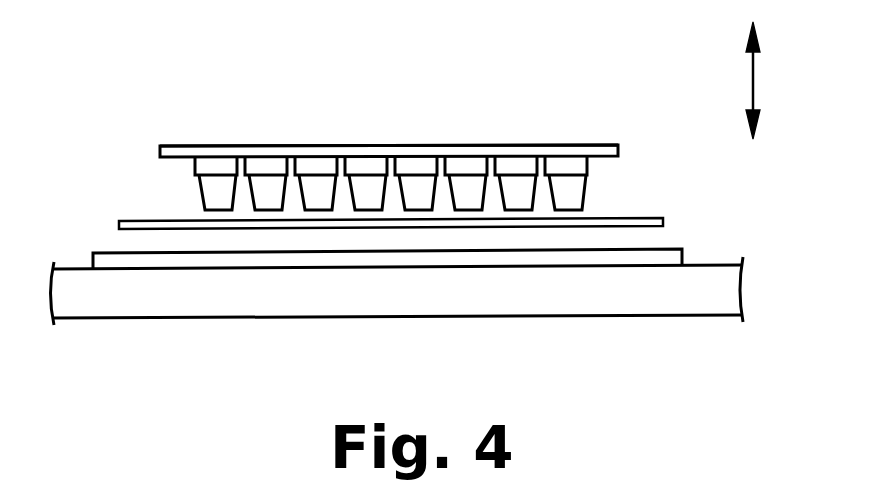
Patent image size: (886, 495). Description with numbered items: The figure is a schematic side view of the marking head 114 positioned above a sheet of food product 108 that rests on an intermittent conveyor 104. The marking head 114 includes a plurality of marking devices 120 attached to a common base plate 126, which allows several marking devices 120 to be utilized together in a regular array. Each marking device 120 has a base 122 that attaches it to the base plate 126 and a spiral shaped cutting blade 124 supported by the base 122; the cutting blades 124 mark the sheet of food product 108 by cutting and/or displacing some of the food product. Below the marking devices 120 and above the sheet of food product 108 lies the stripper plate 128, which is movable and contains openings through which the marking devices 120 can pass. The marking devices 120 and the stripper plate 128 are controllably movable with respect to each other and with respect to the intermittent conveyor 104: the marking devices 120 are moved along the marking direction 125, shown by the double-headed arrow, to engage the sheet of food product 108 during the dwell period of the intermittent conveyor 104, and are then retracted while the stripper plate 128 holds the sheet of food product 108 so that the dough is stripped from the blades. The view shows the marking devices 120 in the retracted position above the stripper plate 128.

The intermittent conveyor 104 is at (177, 305).
The sheet of food product 108 is at (90, 252).
The marking head 114 is at (432, 124).
The marking devices 120 is at (436, 143).
The base 122 is at (585, 168).
The cutting blade 124 is at (582, 198).
The base plate 126 is at (559, 147).
The stripper plate 128 is at (663, 220).
The marking direction 125 is at (755, 77).